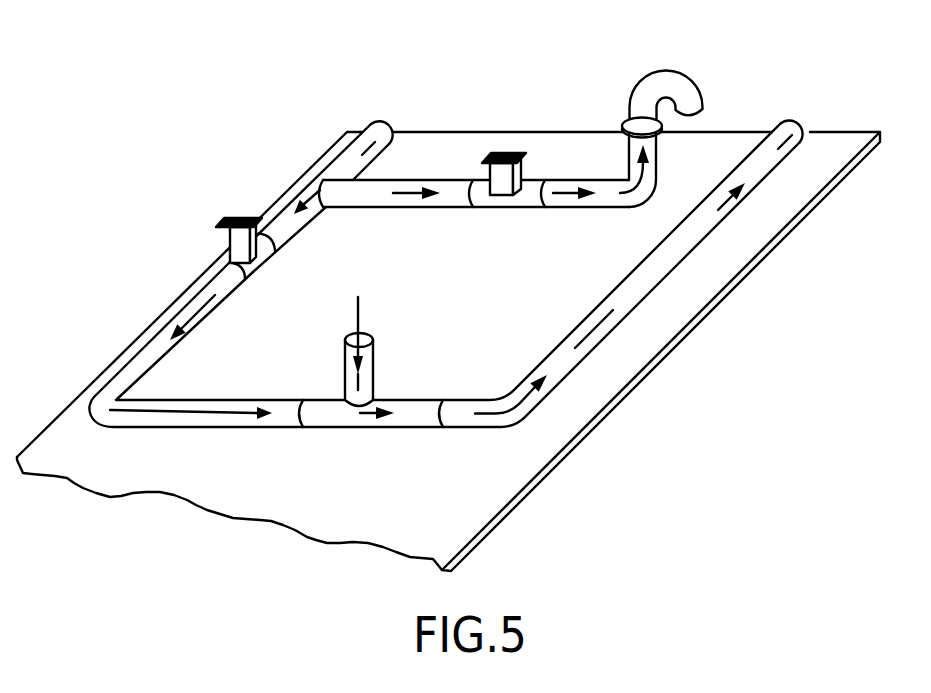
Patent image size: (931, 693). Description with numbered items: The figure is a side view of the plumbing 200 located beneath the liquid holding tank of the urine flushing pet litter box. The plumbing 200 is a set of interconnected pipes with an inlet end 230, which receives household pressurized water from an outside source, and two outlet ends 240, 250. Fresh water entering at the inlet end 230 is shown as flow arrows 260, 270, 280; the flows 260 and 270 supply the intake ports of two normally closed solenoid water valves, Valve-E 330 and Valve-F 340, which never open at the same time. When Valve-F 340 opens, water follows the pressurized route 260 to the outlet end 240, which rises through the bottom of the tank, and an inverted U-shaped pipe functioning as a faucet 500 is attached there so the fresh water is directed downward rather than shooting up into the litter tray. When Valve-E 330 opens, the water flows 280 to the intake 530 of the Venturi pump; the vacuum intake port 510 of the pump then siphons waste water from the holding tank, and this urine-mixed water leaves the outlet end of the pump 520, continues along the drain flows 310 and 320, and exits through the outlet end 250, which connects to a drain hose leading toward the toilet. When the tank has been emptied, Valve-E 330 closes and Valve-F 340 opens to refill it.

The plumbing 200 is at (157, 130).
The inlet end 230 is at (373, 124).
The outlet end 240 is at (662, 125).
The outlet end 250 is at (793, 124).
The incoming water flow 260 is at (393, 193).
The incoming water flow 270 is at (325, 181).
The incoming water flow 280 is at (126, 378).
The wastewater flow 310 is at (528, 397).
The wastewater flow 320 is at (678, 252).
The Valve-E solenoid water valve 330 is at (231, 244).
The Valve-F solenoid water valve 340 is at (522, 168).
The inverted U-shaped pipe faucet 500 is at (704, 108).
The vacuum intake port of the Venturi pump 510 is at (358, 313).
The outlet end of the Venturi pump 520 is at (366, 415).
The intake of the Venturi pump 530 is at (328, 427).